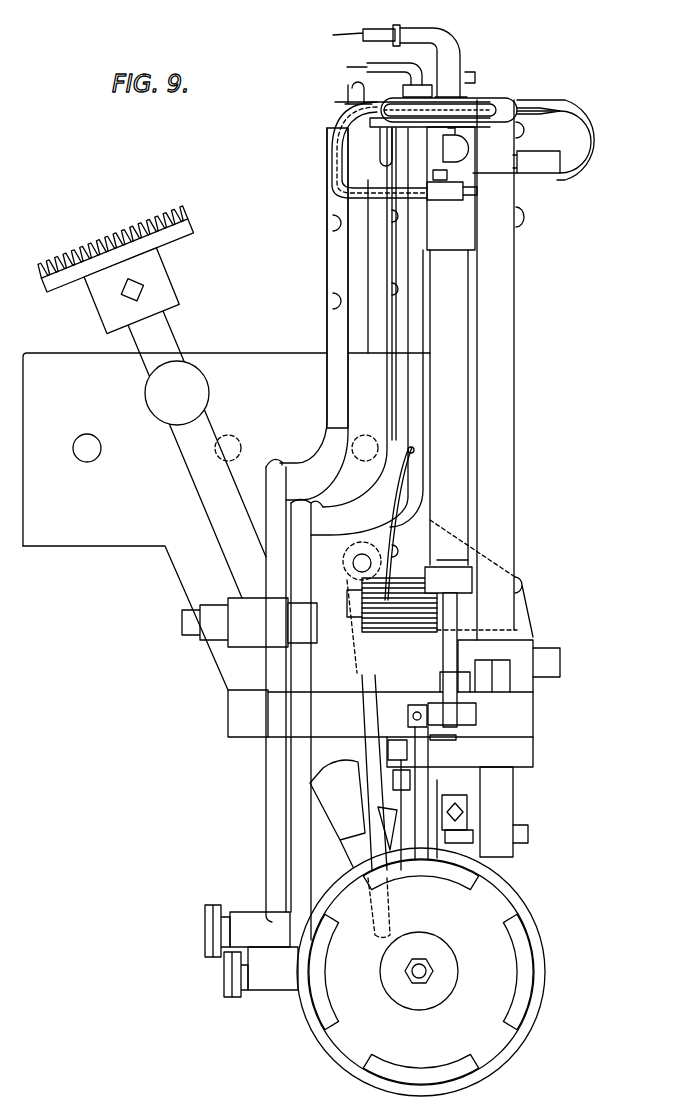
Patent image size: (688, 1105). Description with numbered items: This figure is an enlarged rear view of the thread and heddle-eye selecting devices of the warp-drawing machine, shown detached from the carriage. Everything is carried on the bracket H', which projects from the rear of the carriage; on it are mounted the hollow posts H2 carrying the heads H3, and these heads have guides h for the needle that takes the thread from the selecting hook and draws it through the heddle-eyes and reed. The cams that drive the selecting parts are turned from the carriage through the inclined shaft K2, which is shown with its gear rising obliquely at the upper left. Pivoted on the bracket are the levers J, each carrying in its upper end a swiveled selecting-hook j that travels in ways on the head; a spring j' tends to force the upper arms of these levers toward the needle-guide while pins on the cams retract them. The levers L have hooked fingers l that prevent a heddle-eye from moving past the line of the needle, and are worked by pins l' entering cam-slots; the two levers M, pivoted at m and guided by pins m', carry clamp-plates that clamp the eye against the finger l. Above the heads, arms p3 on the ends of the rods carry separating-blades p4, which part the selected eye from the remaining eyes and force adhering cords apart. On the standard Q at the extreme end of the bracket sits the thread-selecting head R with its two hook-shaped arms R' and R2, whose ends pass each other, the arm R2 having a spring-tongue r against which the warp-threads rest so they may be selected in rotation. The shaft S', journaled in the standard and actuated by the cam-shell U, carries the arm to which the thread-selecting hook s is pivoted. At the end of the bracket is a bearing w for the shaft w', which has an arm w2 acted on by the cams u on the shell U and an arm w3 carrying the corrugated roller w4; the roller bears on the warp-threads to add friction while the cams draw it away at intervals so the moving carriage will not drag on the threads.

The inclined shaft K2 is at (226, 448).
The bracket H' is at (371, 682).
The pivot of levers M m is at (302, 623).
The pins l' is at (210, 931).
The pins m' is at (224, 974).
The levers L is at (299, 525).
The levers M is at (357, 534).
The arm R' is at (388, 151).
The hollow posts H2 is at (451, 346).
The standard Q is at (498, 370).
The heads H3 is at (412, 227).
The levers J is at (404, 342).
The spring j' is at (401, 506).
The separating-blades p4 is at (366, 27).
The arms p3 is at (437, 50).
The selecting-hook j is at (389, 72).
The thread-selecting head R is at (449, 96).
The spring-tongue r is at (444, 114).
The arm R2 is at (553, 140).
The fingers l is at (344, 104).
The selecting-hook s is at (448, 154).
The guides h is at (365, 706).
The corrugated roller w4 is at (392, 598).
The arm w3 is at (469, 647).
The bearing w is at (459, 721).
The shaft w' is at (446, 787).
The arm w2 is at (422, 752).
The cam-shell U is at (421, 972).
The cams u is at (421, 972).
The shaft S' is at (530, 870).